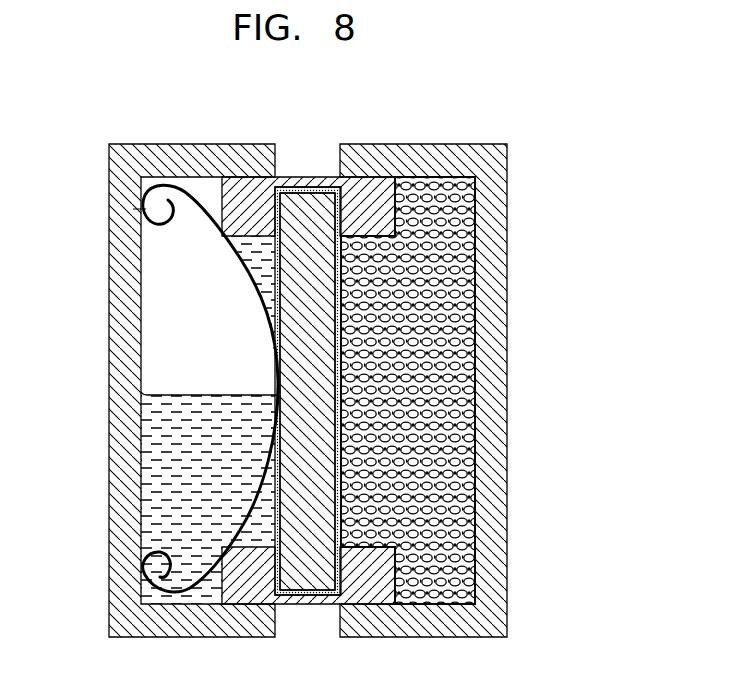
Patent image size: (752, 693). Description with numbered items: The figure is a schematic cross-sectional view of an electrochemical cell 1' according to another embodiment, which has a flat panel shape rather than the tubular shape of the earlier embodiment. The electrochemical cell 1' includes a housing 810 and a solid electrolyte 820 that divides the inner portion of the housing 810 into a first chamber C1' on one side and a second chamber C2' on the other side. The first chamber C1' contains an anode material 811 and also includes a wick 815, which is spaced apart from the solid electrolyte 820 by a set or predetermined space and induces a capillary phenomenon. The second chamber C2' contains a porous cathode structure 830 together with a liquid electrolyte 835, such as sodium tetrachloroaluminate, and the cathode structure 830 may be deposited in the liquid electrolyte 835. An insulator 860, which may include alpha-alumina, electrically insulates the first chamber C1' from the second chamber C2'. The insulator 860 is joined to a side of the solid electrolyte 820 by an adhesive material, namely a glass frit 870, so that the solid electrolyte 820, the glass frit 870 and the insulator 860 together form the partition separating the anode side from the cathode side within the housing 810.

The electrochemical cell 1' is at (595, 96).
The housing 810 is at (242, 627).
The anode material 811 is at (162, 422).
The wick 815 is at (233, 252).
The solid electrolyte 820 is at (322, 207).
The porous cathode structure 830 is at (455, 268).
The liquid electrolyte 835 is at (457, 343).
The insulator 860 is at (378, 208).
The glass frit 870 is at (298, 187).
The first chamber C1' is at (209, 286).
The second chamber C2' is at (461, 390).